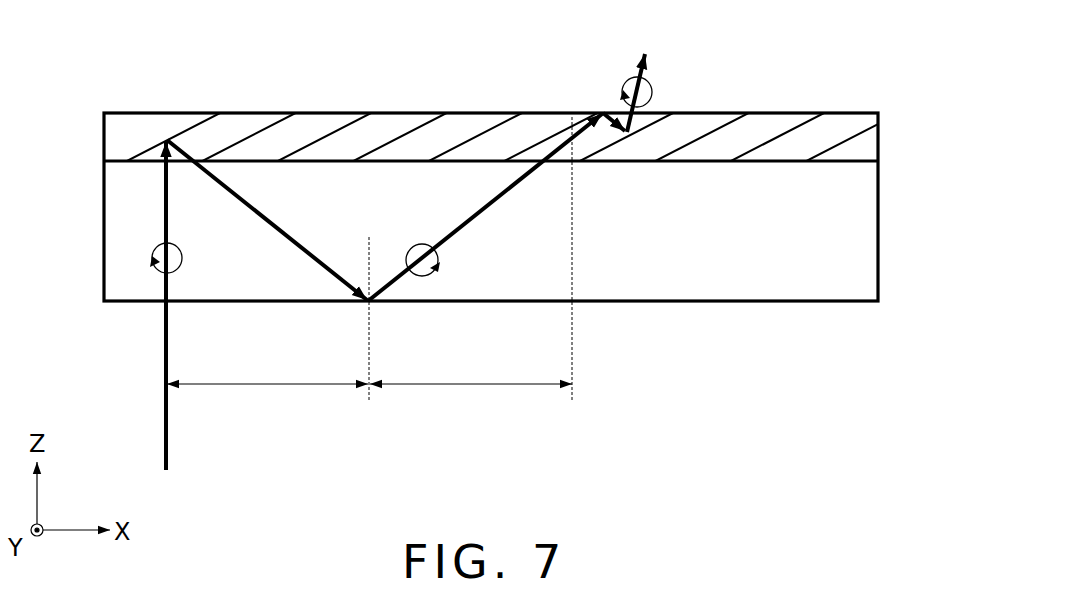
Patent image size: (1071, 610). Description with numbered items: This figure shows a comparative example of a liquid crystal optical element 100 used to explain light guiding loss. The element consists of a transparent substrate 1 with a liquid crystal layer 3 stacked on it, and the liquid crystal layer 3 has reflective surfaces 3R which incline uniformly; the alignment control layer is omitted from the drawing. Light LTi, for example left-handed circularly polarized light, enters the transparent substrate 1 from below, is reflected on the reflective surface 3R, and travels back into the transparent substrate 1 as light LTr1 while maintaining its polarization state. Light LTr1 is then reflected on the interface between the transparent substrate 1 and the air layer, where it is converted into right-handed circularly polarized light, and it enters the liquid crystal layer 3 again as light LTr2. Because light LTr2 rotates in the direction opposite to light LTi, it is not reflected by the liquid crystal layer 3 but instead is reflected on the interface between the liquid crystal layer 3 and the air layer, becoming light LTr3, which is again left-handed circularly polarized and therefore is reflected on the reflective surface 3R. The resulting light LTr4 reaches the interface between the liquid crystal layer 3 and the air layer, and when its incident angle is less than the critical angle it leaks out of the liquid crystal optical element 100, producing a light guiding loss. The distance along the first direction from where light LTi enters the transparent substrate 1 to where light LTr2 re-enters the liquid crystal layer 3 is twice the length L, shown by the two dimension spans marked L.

The transparent substrate 1 is at (868, 232).
The liquid crystal layer 3 is at (868, 137).
The reflective surface 3R is at (195, 123).
The liquid crystal optical element 100 is at (791, 51).
The light LTi is at (166, 324).
The light LTr1 is at (253, 210).
The light LTr2 is at (505, 200).
The light LTr3 is at (617, 112).
The light LTr4 is at (650, 67).
The length L is at (369, 271).